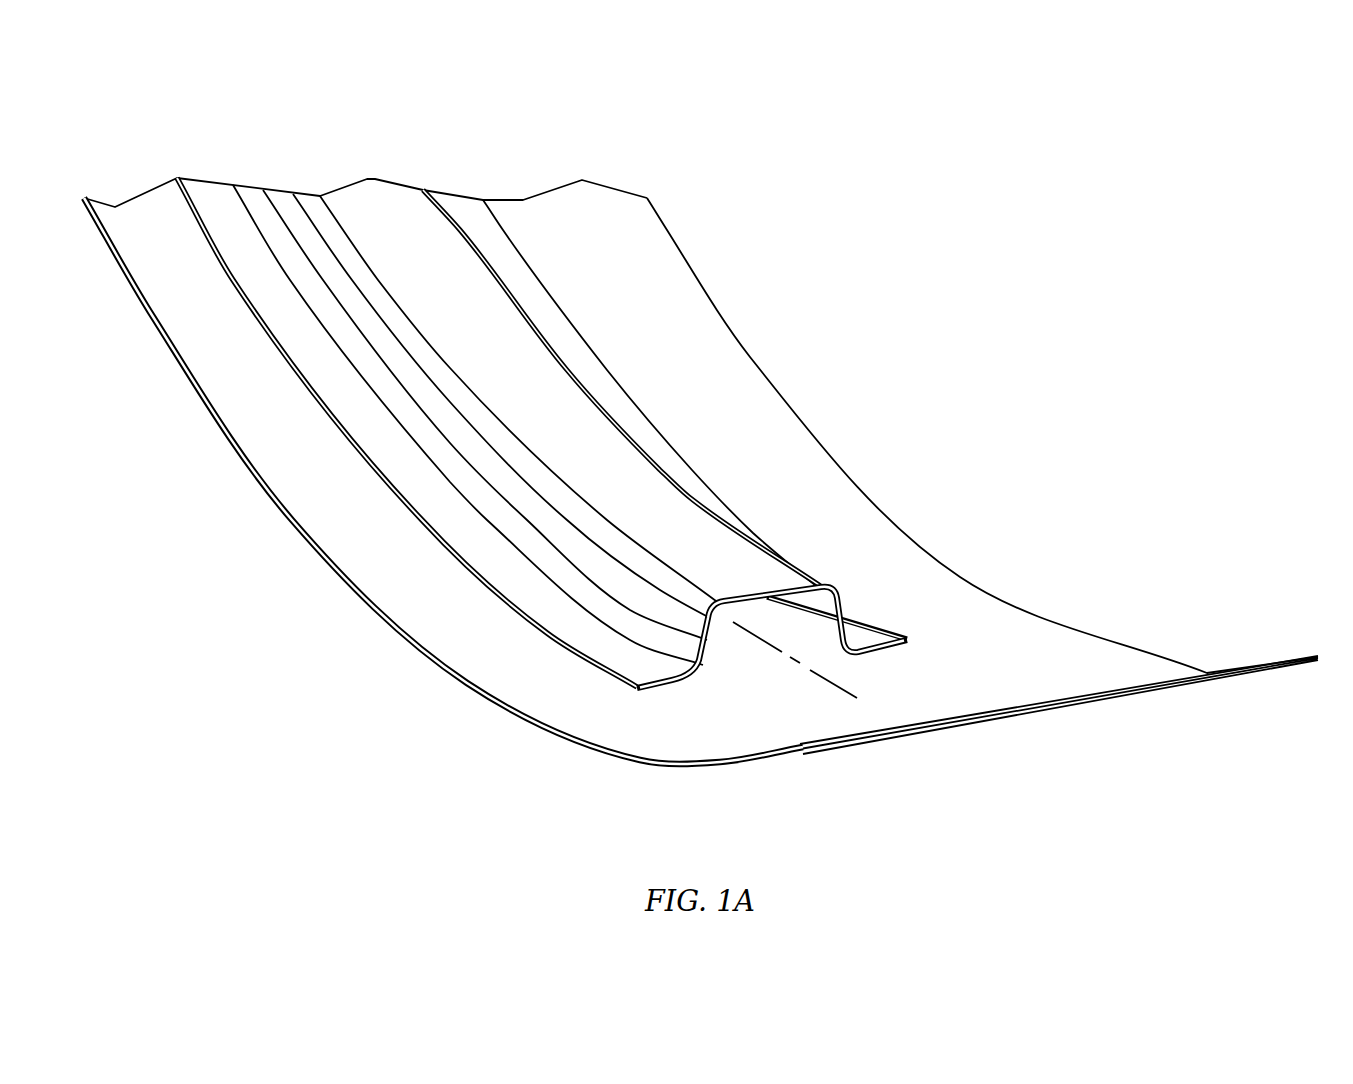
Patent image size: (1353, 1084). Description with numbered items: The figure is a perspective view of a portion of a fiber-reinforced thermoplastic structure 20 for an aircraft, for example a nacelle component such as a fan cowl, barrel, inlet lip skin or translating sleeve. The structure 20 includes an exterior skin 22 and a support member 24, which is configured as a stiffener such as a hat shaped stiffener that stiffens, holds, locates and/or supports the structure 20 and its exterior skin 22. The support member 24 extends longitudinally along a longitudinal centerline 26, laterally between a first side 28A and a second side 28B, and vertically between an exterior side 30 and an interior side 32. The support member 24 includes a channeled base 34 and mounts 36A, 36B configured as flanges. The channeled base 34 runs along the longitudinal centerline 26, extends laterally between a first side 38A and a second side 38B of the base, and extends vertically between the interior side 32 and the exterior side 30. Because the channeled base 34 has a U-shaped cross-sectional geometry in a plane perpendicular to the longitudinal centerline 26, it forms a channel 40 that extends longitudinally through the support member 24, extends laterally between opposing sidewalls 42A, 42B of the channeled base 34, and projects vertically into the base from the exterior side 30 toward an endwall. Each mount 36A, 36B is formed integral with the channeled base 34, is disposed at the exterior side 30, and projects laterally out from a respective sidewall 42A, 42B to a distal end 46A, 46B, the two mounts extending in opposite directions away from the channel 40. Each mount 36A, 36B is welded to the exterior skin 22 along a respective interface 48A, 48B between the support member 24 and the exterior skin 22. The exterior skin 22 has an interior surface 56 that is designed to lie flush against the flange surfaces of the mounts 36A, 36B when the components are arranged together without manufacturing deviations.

The fiber-reinforced thermoplastic structure 20 is at (499, 237).
The exterior skin 22 is at (982, 476).
The support member 24 is at (388, 180).
The longitudinal centerline 26 is at (836, 687).
The first side 28A is at (407, 438).
The second side 28B is at (837, 575).
The exterior side 30 is at (770, 638).
The interior side 32 is at (737, 557).
The channeled base 34 is at (602, 409).
The first mount 36A is at (614, 692).
The second mount 36B is at (695, 419).
The first side of the channeled base 38A is at (702, 715).
The second side of the channeled base 38B is at (917, 645).
The channel 40 is at (734, 644).
The first sidewall 42A is at (712, 647).
The second sidewall 42B is at (846, 612).
The distal end of the first mount 46A is at (547, 633).
The distal end of the second mount 46B is at (870, 617).
The first interface 48A is at (403, 394).
The second interface 48B is at (622, 338).
The interior surface 56 is at (1010, 652).